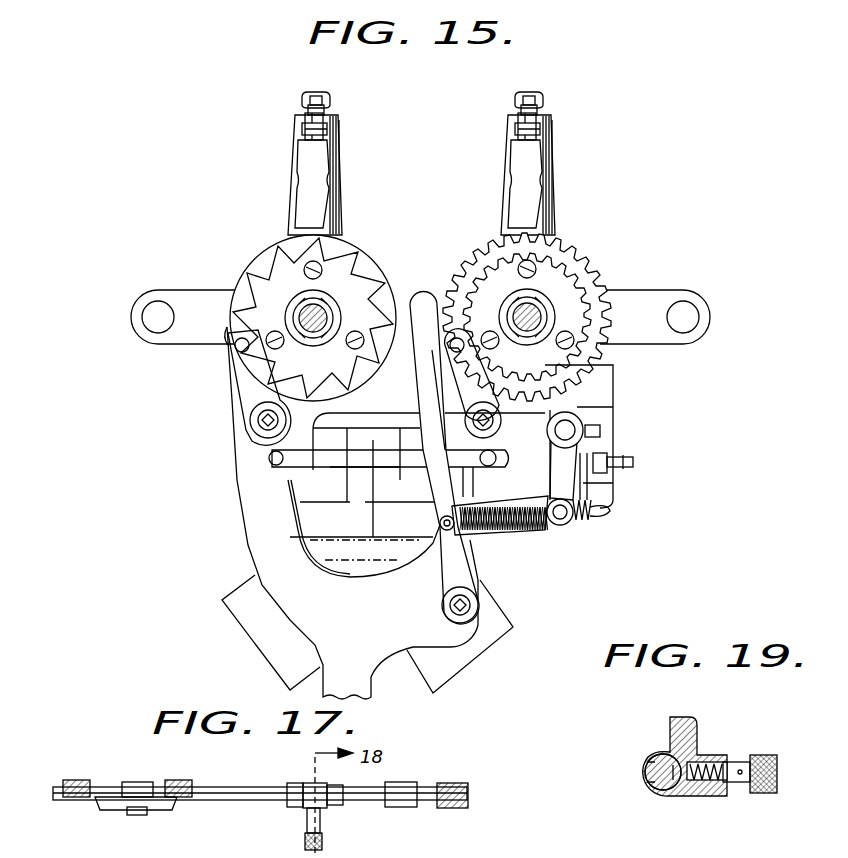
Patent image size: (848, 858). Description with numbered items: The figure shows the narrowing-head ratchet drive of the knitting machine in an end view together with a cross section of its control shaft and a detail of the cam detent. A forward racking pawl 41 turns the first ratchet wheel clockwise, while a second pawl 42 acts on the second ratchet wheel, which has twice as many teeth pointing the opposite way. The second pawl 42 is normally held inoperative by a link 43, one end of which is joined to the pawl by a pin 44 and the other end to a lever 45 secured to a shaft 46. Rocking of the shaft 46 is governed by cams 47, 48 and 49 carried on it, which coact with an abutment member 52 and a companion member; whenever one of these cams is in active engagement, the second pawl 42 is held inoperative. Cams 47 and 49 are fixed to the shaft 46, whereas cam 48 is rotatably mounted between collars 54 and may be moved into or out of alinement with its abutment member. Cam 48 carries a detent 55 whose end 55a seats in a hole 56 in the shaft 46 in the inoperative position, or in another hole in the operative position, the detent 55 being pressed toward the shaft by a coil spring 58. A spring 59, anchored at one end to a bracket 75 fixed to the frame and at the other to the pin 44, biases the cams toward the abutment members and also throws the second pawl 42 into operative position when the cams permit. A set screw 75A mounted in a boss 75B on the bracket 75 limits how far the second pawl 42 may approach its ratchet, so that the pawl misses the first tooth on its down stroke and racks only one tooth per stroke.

In FIG. 15, the forward racking pawl 41 is at (460, 388).
In FIG. 15, the second pawl 42 is at (417, 298).
In FIG. 15, the link 43 is at (528, 530).
In FIG. 15, the pin 44 is at (447, 527).
In FIG. 15, the lever 45 is at (563, 483).
In FIG. 15, the shaft 46 is at (568, 428).
In FIG. 17, the shaft 46 is at (243, 790).
In FIG. 19, the shaft 46 is at (655, 793).
In FIG. 17, the cam 47 is at (165, 803).
In FIG. 17, the cam 48 is at (308, 807).
In FIG. 19, the cam 48 is at (678, 718).
In FIG. 17, the cam 49 is at (402, 800).
In FIG. 15, the abutment member 52 is at (545, 303).
In FIG. 17, the abutment member 52 is at (75, 783).
In FIG. 17, the collars 54 is at (295, 792).
In FIG. 17, the detent 55 is at (183, 782).
In FIG. 19, the detent 55 is at (730, 760).
In FIG. 19, the end of detent 55a is at (697, 755).
In FIG. 15, the hole 56 is at (478, 337).
In FIG. 19, the hole 56 is at (678, 780).
In FIG. 15, the coil spring 58 is at (567, 278).
In FIG. 19, the coil spring 58 is at (710, 755).
In FIG. 15, the spring 59 is at (585, 520).
In FIG. 15, the bracket 75 is at (600, 513).
In FIG. 15, the set screw 75A is at (633, 461).
In FIG. 15, the boss 75B is at (604, 453).